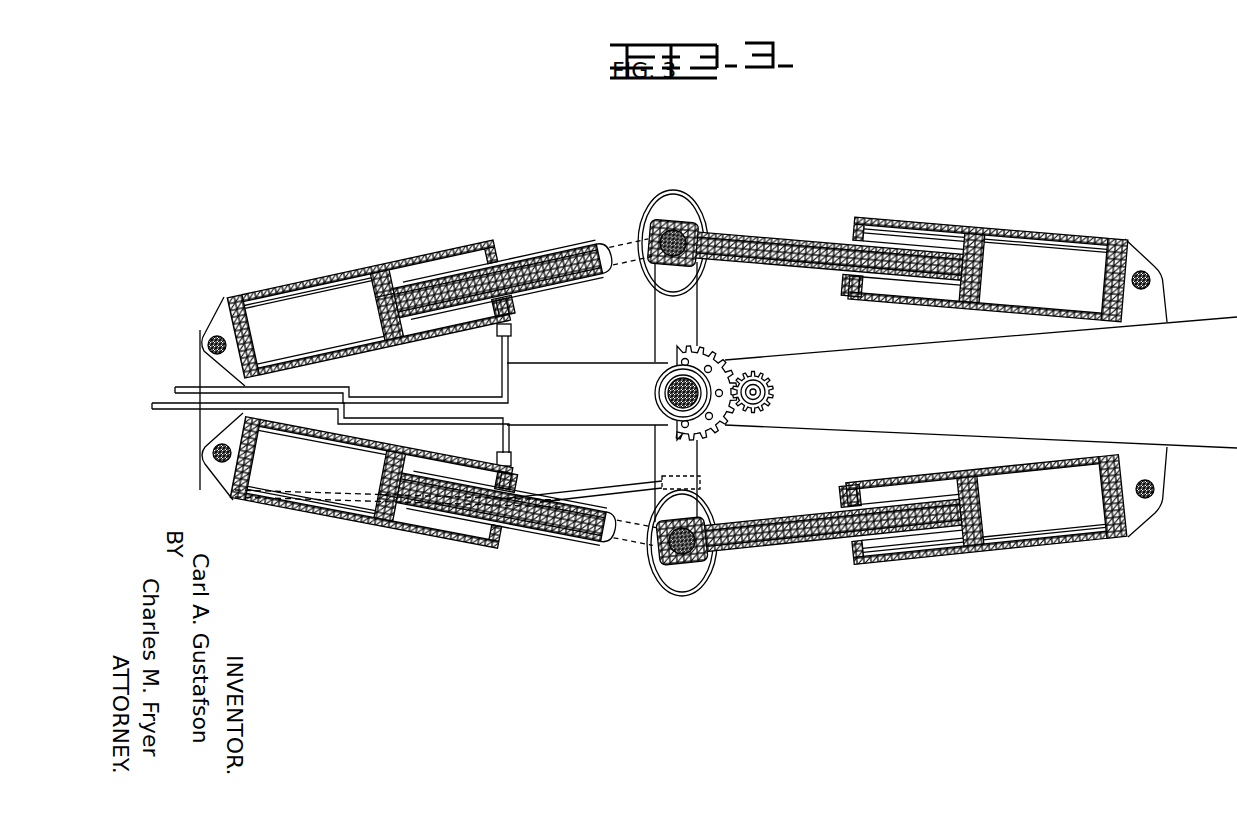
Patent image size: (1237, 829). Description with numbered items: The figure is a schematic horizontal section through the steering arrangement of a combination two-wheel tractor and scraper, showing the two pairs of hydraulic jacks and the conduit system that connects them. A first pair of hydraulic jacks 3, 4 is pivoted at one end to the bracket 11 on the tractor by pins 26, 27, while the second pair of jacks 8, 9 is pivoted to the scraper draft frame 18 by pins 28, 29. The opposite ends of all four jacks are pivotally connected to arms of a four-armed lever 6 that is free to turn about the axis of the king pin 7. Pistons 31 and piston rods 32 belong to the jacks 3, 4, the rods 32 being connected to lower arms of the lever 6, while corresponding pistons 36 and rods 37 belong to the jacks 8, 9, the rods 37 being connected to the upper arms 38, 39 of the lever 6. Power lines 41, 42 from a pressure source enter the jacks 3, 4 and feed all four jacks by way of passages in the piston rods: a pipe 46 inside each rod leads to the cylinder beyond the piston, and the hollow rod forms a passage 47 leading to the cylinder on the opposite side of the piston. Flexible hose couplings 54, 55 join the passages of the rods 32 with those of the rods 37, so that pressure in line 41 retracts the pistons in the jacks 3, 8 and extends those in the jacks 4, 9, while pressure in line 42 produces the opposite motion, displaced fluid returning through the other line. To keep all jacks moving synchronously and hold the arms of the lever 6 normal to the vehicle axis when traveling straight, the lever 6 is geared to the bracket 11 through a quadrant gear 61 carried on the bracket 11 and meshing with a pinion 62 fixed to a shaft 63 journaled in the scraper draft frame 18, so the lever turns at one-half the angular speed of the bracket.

The hydraulic jack 3 is at (352, 276).
The hydraulic jack 4 is at (343, 519).
The lever 6 is at (684, 392).
The king pin 7 is at (670, 394).
The hydraulic jack 8 is at (1075, 215).
The hydraulic jack 9 is at (1055, 543).
The bracket 11 is at (562, 404).
The draft connection 18 is at (1040, 392).
The pin 26 is at (215, 344).
The pin 27 is at (216, 457).
The pin 28 is at (1144, 277).
The pin 29 is at (1153, 492).
The piston 31 is at (390, 333).
The piston rod 32 is at (561, 266).
The piston 36 is at (967, 237).
The piston rod 37 is at (778, 225).
The upper arm 38 is at (693, 310).
The upper arm 39 is at (687, 458).
The power line 41 is at (173, 403).
The power line 42 is at (187, 388).
The pipe 46 is at (514, 266).
The passage 47 is at (543, 282).
The flexible hose coupling 54 is at (667, 297).
The flexible hose coupling 55 is at (680, 195).
The quadrant gear 61 is at (703, 360).
The pinion 62 is at (767, 380).
The shaft 63 is at (768, 394).